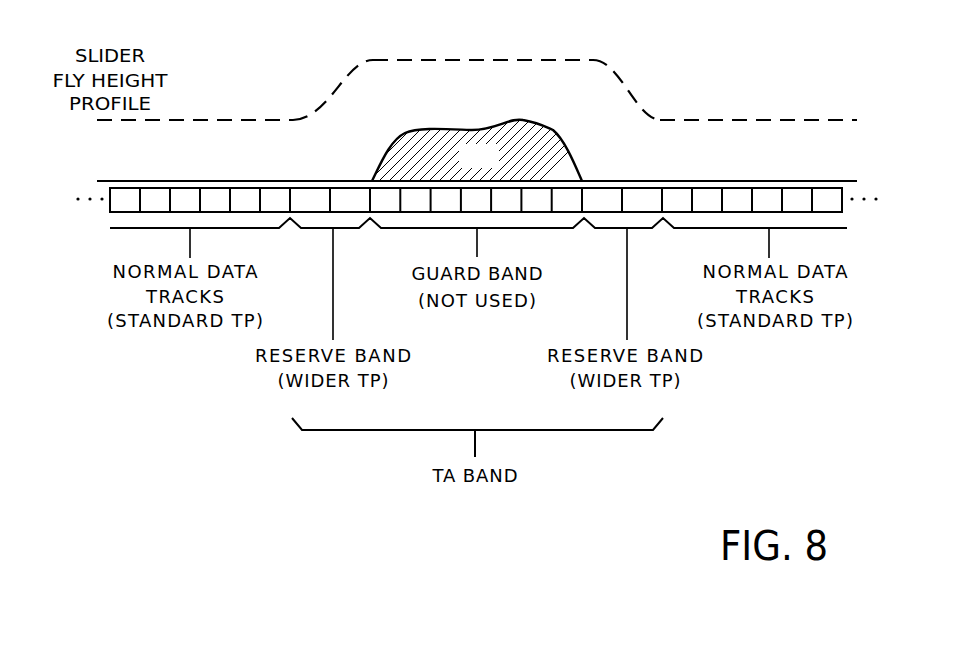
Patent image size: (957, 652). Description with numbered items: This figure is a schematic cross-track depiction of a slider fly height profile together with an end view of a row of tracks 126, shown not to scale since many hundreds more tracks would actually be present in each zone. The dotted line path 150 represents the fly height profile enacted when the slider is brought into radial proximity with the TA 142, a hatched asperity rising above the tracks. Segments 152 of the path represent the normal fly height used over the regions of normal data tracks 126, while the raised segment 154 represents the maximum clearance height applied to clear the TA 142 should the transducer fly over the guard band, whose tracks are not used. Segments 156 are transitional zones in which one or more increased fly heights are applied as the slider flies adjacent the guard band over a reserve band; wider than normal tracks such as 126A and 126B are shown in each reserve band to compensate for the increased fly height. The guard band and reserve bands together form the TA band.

The tracks 126 is at (472, 171).
The wider than normal track 126A is at (313, 186).
The wider than normal track 126B is at (353, 185).
The TA 142 is at (480, 125).
The dotted line path 150 is at (477, 68).
The segments 152 is at (197, 121).
The segment 154 is at (463, 60).
The segments 156 is at (345, 88).